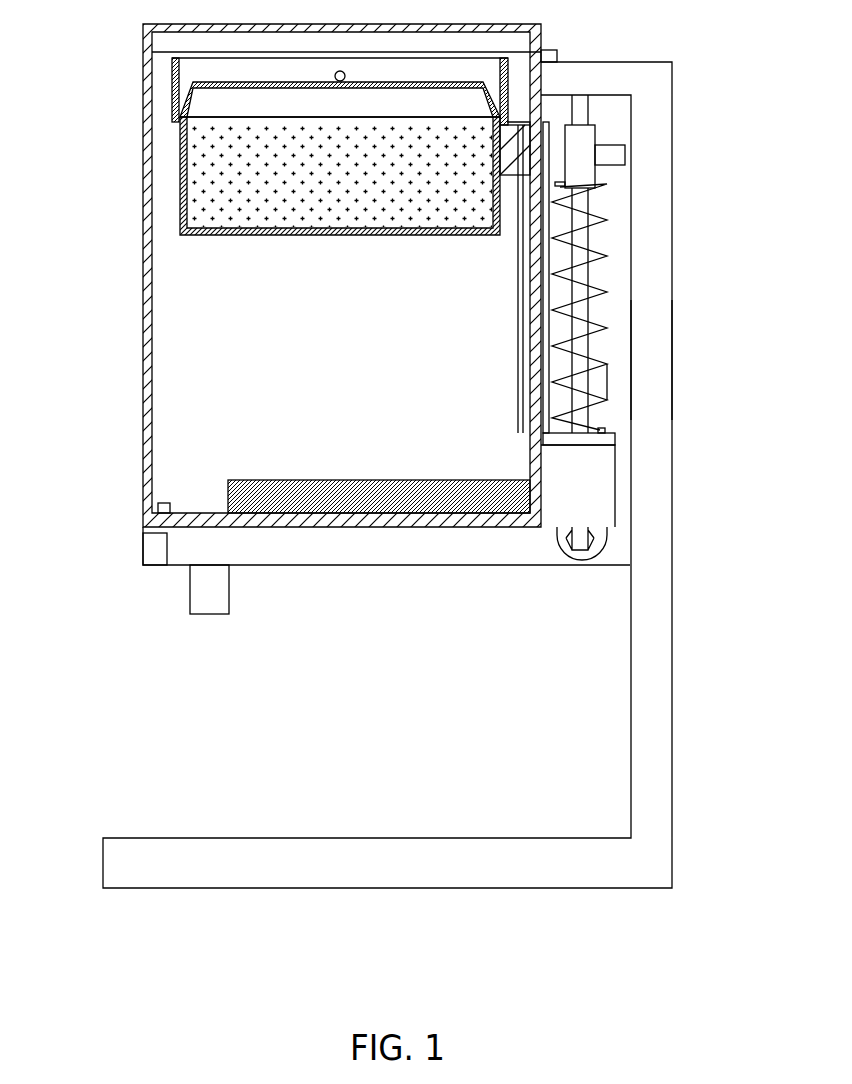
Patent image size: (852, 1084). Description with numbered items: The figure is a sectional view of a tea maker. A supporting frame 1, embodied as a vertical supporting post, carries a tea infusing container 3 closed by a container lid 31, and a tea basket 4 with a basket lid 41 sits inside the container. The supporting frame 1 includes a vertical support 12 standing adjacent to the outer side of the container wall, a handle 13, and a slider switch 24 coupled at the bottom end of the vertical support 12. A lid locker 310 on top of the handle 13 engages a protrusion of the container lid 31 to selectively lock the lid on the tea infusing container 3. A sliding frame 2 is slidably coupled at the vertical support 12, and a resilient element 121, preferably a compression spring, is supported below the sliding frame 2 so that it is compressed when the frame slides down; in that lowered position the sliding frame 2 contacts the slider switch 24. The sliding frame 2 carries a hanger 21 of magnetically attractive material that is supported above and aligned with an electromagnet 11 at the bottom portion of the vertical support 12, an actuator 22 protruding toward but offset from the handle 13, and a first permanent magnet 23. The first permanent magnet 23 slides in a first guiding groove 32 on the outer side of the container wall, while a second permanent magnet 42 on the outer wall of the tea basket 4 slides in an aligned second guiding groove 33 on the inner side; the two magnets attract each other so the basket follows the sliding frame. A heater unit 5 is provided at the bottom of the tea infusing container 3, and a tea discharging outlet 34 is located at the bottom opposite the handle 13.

The supporting frame 1 is at (613, 550).
The electromagnet 11 is at (566, 507).
The vertical support 12 is at (605, 430).
The resilient element 121 is at (598, 370).
The handle 13 is at (655, 337).
The sliding frame 2 is at (617, 171).
The hanger 21 is at (558, 185).
The actuator 22 is at (613, 158).
The first permanent magnet 23 is at (552, 135).
The slider switch 24 is at (585, 440).
The tea infusing container 3 is at (147, 363).
The container lid 31 is at (148, 40).
The lid locker 310 is at (622, 33).
The first guiding groove 32 is at (575, 270).
The second guiding groove 33 is at (527, 347).
The tea discharging outlet 34 is at (218, 580).
The tea basket 4 is at (193, 170).
The basket lid 41 is at (177, 85).
The second permanent magnet 42 is at (525, 152).
The heater unit 5 is at (275, 480).